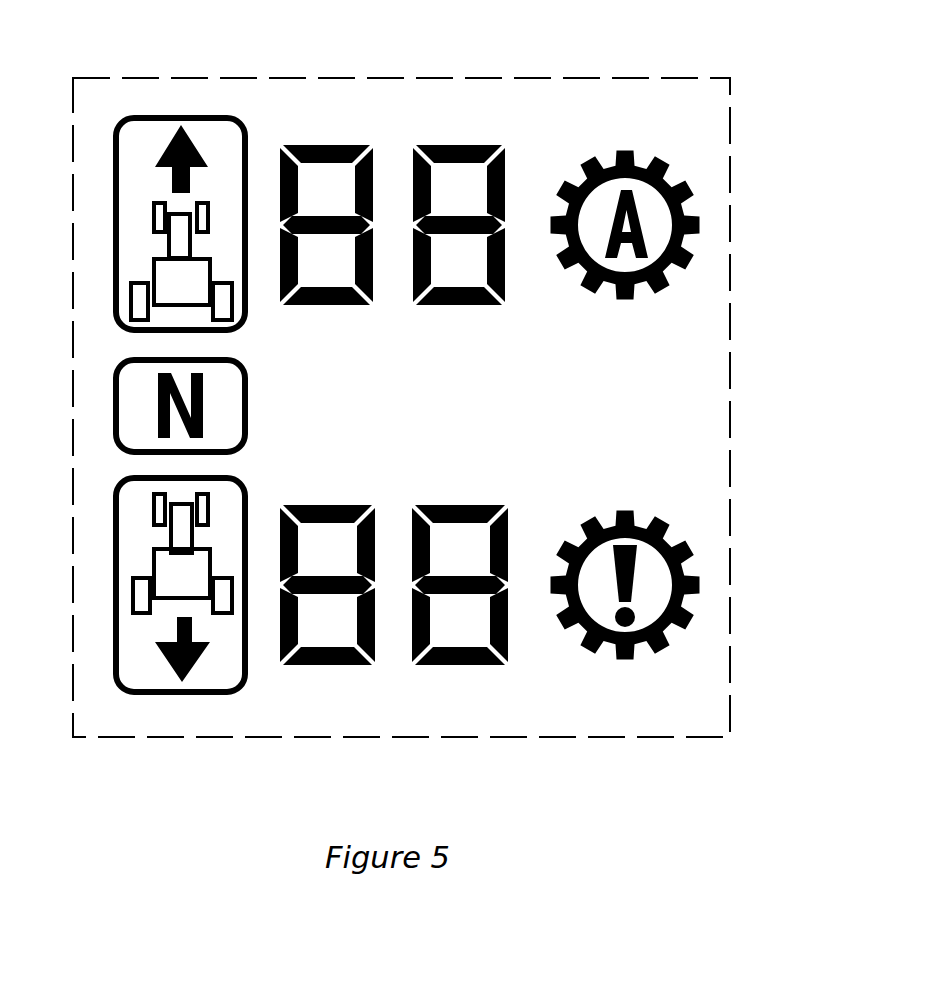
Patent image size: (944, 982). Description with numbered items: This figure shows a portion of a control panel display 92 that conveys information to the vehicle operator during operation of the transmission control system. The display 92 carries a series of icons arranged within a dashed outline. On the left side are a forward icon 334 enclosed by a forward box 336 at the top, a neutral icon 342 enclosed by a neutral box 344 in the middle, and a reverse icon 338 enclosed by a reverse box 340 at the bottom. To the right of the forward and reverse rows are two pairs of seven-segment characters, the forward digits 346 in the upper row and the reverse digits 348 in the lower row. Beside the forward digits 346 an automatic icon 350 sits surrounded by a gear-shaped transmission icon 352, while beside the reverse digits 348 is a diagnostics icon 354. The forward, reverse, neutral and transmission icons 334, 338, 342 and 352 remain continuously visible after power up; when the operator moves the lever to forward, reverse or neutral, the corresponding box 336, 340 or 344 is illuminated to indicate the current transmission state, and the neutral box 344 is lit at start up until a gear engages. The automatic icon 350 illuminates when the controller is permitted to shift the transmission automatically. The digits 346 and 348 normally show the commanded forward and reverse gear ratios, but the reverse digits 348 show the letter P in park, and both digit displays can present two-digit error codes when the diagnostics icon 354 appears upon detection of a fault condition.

The display 92 is at (625, 737).
The forward icon 334 is at (182, 215).
The forward box 336 is at (165, 118).
The reverse icon 338 is at (170, 574).
The reverse box 340 is at (158, 698).
The neutral icon 342 is at (158, 413).
The neutral box 344 is at (116, 392).
The forward digits 346 is at (460, 115).
The reverse digits 348 is at (437, 703).
The automatic icon 350 is at (645, 229).
The transmission icon 352 is at (690, 262).
The diagnostics icon 354 is at (695, 556).